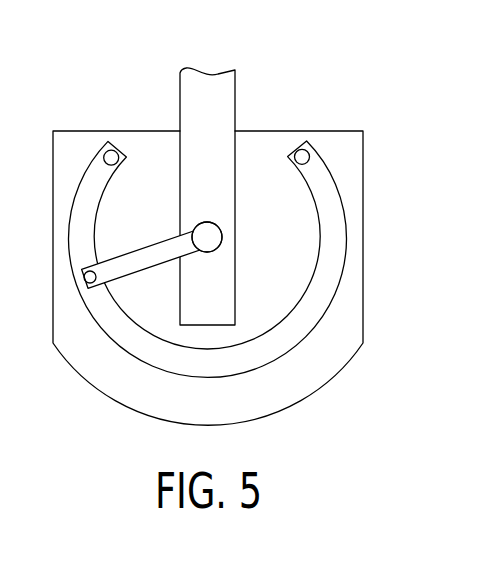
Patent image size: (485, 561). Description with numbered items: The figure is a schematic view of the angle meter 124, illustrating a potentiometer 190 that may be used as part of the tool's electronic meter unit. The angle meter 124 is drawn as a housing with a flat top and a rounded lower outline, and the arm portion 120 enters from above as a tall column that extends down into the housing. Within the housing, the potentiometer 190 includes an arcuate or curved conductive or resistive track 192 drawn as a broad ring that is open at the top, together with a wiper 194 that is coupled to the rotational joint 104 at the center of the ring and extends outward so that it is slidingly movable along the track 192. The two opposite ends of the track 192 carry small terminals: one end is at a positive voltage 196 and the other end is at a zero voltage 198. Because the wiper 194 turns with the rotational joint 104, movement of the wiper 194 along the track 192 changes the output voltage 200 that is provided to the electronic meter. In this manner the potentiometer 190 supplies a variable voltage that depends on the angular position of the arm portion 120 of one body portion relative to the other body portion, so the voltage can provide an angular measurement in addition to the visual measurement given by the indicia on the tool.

The rotational joint 104 is at (204, 224).
The arm portion 120 is at (236, 98).
The angle meter 124 is at (62, 384).
The potentiometer 190 is at (276, 385).
The track 192 is at (332, 172).
The wiper 194 is at (135, 252).
The positive voltage 196 is at (116, 150).
The zero voltage 198 is at (297, 149).
The output voltage 200 is at (218, 245).